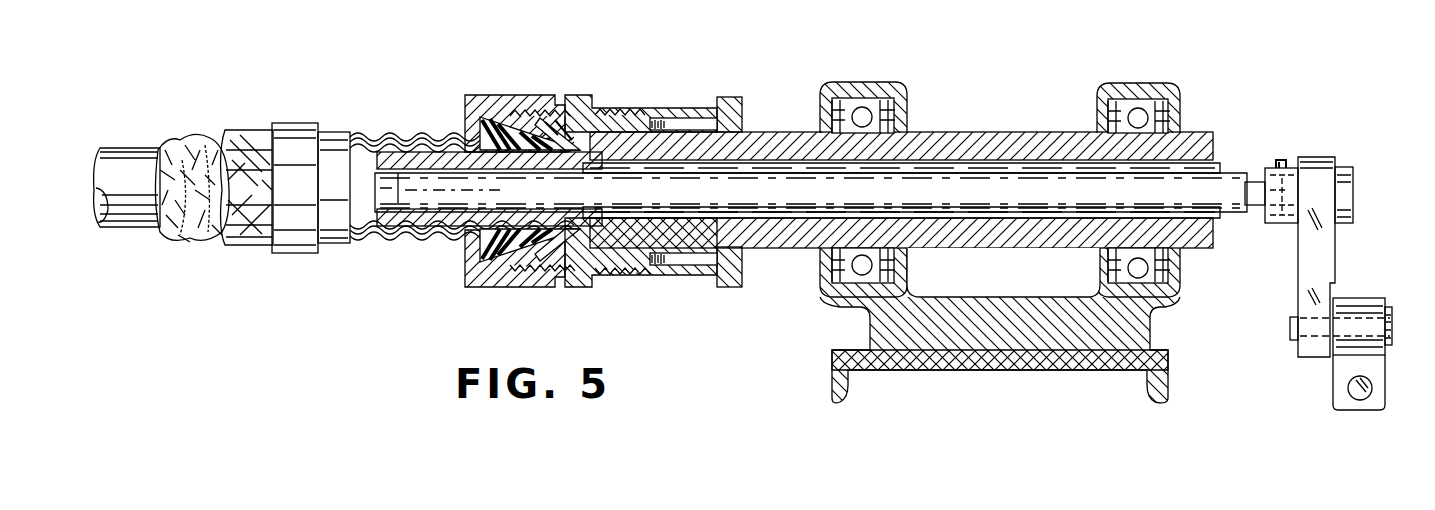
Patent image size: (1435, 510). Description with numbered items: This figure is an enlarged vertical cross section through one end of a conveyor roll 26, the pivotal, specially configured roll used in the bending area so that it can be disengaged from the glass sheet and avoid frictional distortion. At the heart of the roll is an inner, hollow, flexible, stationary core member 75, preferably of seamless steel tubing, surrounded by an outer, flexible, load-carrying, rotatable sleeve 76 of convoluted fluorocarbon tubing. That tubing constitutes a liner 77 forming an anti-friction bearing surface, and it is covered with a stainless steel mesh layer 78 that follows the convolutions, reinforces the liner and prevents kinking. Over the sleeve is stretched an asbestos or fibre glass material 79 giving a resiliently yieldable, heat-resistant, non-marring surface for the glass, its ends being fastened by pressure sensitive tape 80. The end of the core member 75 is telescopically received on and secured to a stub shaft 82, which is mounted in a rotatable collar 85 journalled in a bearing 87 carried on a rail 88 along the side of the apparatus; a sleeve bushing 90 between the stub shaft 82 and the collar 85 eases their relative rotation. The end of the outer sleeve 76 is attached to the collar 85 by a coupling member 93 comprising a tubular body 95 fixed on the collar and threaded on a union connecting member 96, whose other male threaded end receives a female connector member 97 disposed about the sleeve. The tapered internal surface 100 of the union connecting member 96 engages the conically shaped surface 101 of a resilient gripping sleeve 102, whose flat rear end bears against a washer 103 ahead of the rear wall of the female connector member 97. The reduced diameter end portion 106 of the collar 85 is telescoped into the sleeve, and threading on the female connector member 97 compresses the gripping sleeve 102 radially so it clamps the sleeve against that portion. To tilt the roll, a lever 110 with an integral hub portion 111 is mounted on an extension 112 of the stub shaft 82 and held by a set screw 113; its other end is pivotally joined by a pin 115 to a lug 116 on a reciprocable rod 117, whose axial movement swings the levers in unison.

The conveyor roll 26 is at (126, 262).
The inner core member 75 is at (113, 158).
The outer sleeve 76 is at (163, 140).
The liner 77 is at (385, 138).
The stainless steel mesh layer 78 is at (425, 136).
The asbestos or fibre glass material 79 is at (232, 247).
The pressure sensitive tape 80 is at (285, 130).
The stub shaft 82 is at (1025, 185).
The collar 85 is at (960, 134).
The bearing 87 is at (895, 90).
The rail 88 is at (928, 360).
The sleeve bushing 90 is at (580, 200).
The coupling member 93 is at (650, 74).
The tubular body 95 is at (690, 108).
The union connecting member 96 is at (590, 96).
The female connector member 97 is at (470, 96).
The internal surface 100 is at (528, 128).
The conically shaped surface 101 is at (516, 128).
The gripping sleeve 102 is at (495, 265).
The washer 103 is at (505, 235).
The reduced diameter end portion 106 is at (510, 215).
The lever 110 is at (1330, 245).
The hub portion 111 is at (1300, 165).
The extension 112 is at (1275, 228).
The set screw 113 is at (1280, 158).
The pin 115 is at (1345, 300).
The lug 116 is at (1345, 358).
The reciprocable rod 117 is at (1350, 396).